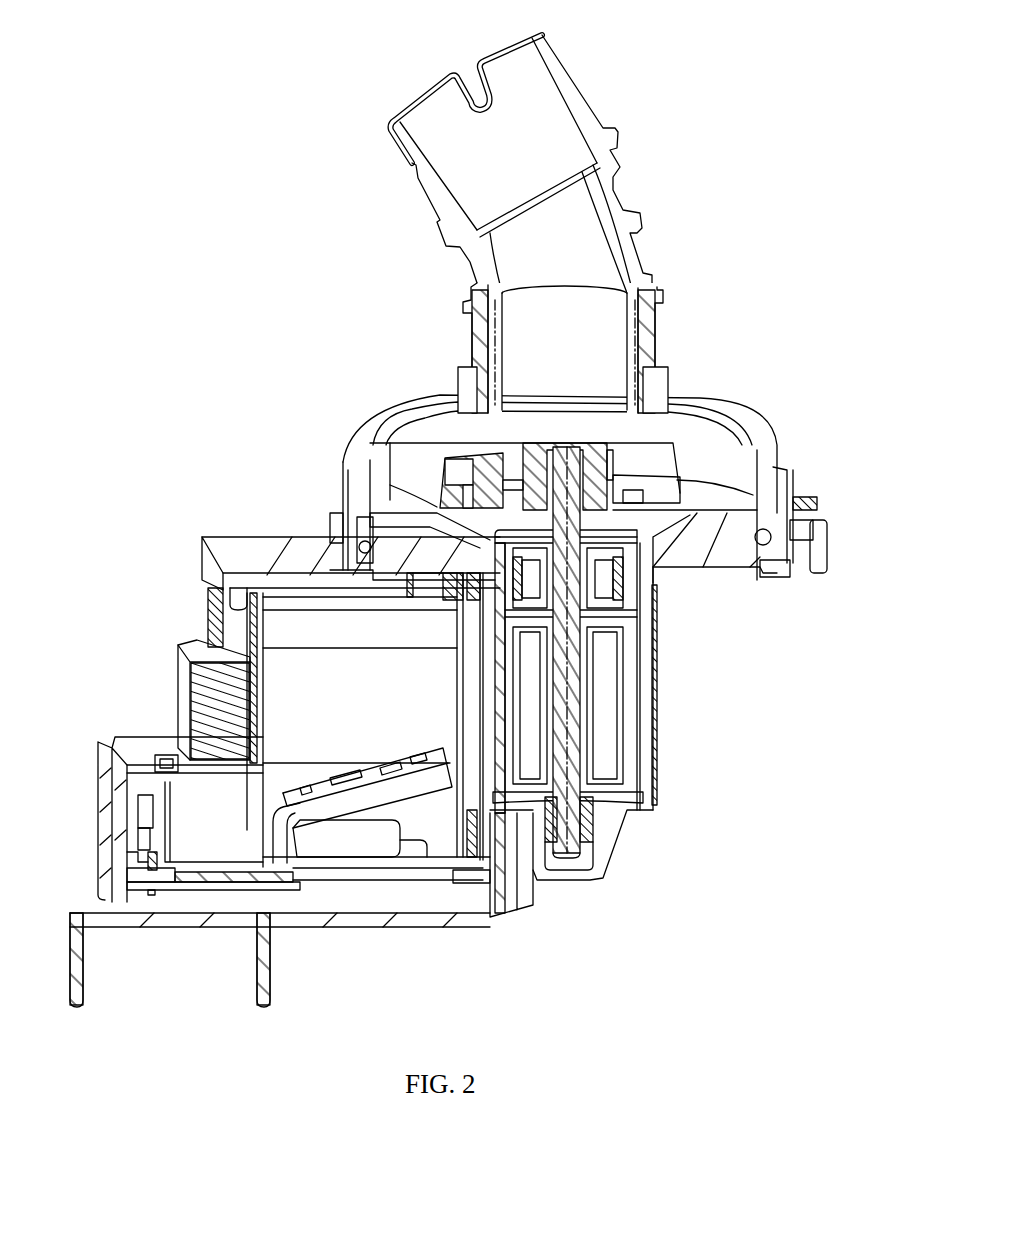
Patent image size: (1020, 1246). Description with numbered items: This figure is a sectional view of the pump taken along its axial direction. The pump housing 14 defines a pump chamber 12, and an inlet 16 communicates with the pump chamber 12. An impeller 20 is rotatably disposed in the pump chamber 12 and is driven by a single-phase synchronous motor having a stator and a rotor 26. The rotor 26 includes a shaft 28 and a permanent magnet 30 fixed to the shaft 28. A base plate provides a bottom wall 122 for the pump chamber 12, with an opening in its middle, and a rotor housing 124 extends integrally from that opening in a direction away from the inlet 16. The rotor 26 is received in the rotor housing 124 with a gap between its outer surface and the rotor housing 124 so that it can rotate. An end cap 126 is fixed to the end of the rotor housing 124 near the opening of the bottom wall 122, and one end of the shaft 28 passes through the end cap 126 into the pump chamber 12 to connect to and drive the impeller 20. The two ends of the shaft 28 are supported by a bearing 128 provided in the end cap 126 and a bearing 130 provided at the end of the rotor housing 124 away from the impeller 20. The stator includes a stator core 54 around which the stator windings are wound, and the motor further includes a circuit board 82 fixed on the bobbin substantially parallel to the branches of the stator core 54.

The inlet 16 is at (537, 110).
The pump housing 14 is at (710, 400).
The pump chamber 12 is at (733, 447).
The impeller 20 is at (485, 465).
The bottom wall 122 is at (435, 512).
The end cap 126 is at (435, 540).
The bearing 128 is at (655, 590).
The shaft 28 is at (565, 690).
The permanent magnet 30 is at (605, 740).
The rotor housing 124 is at (640, 773).
The bearing 130 is at (590, 800).
The rotor 26 is at (513, 812).
The stator core 54 is at (193, 653).
The circuit board 82 is at (247, 873).